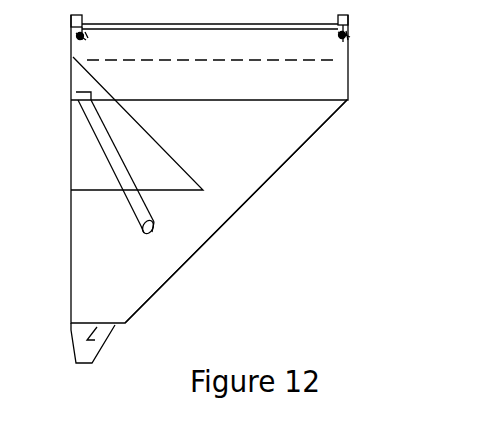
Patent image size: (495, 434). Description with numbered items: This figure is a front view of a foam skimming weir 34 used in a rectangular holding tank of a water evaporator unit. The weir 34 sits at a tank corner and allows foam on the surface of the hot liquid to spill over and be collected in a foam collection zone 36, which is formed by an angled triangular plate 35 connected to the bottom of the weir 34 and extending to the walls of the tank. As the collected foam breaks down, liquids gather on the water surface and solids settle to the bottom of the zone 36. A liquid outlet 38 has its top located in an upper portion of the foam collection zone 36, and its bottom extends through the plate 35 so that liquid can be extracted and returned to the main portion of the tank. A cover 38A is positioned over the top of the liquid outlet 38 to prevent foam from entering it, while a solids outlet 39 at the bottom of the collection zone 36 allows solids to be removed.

The foam skimming weir 34 is at (317, 48).
The cover 38A is at (153, 142).
The foam collection zone 36 is at (227, 152).
The angled triangular plate 35 is at (260, 187).
The liquid outlet 38 is at (142, 217).
The solids outlet 39 is at (102, 340).